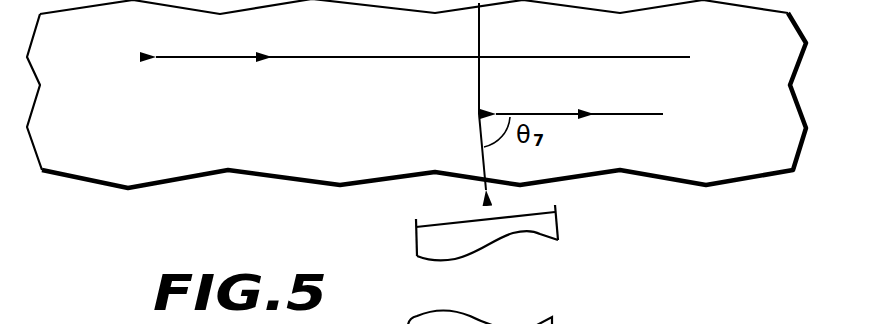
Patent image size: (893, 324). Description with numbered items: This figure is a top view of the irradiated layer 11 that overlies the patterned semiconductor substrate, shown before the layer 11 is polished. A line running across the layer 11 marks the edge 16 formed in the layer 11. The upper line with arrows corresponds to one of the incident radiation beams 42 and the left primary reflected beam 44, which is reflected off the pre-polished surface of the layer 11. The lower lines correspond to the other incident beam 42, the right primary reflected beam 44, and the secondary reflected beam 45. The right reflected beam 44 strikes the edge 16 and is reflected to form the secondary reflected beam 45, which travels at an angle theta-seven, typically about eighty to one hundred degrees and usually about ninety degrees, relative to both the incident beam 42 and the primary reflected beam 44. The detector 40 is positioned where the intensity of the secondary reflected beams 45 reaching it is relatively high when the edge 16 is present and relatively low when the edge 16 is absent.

The layer 11 is at (141, 156).
The edge 16 is at (496, 29).
The detector 40 is at (517, 227).
The incident radiation beam 42 is at (353, 58).
The primary reflected beam 44 is at (212, 58).
The secondary reflected beam 45 is at (485, 163).